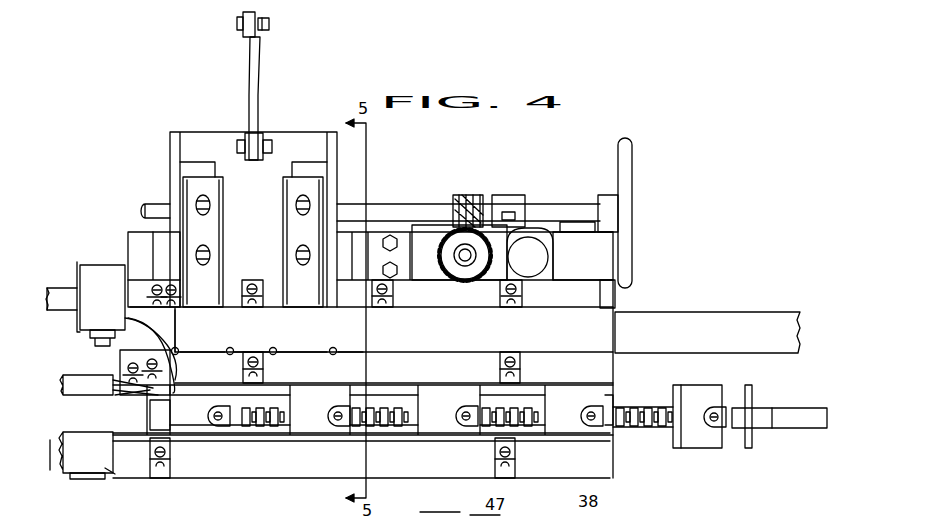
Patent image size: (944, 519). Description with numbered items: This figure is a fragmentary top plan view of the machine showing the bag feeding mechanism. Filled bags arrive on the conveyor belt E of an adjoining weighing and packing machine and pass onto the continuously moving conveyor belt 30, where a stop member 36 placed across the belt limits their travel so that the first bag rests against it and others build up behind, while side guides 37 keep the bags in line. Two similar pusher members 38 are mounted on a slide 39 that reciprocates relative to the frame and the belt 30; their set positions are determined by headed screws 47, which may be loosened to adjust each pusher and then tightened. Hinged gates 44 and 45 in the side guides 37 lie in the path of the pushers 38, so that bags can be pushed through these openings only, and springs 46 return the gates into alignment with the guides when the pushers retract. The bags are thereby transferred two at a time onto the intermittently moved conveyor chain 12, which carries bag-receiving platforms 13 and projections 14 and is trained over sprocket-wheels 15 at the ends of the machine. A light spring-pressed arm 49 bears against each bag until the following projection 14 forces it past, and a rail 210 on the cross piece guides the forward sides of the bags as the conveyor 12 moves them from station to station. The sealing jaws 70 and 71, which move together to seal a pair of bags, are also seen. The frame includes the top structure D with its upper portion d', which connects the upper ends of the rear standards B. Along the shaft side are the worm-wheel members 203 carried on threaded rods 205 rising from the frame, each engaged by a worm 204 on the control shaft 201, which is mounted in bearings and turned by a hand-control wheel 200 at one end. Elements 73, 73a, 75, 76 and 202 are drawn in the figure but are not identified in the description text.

The slide 39 is at (287, 140).
The headed screws 47 is at (212, 199).
The pusher members 38 is at (266, 236).
The top structure D is at (134, 243).
The box 73 is at (100, 277).
The worm-wheel members 203 is at (440, 246).
The threaded rods 205 is at (463, 264).
The worm 204 is at (465, 195).
The block 202 is at (510, 200).
The upper portion of top structure d' is at (542, 212).
The rear standards B is at (545, 260).
The control shaft 201 is at (564, 208).
The hand-control wheel 200 is at (634, 178).
The side guides 37 is at (548, 312).
The stop member 36 is at (177, 330).
The hinged gate 44 is at (286, 350).
The hinged gate 45 is at (324, 350).
The springs 46 is at (273, 354).
The conveyor belt 30 is at (470, 335).
The sealing jaw 70 is at (73, 388).
The arm 73a is at (120, 384).
The spring-pressed arm 49 is at (125, 400).
The rail 210 is at (255, 440).
The sealing jaw 71 is at (65, 462).
The plate 75 is at (80, 470).
The pin 76 is at (105, 470).
The conveyor belt of weighing and packing machine E is at (703, 322).
The sprocket-wheels 15 is at (608, 400).
The conveyor chain 12 is at (655, 431).
The bag-receiving platforms 13 is at (690, 440).
The projections 14 is at (797, 425).